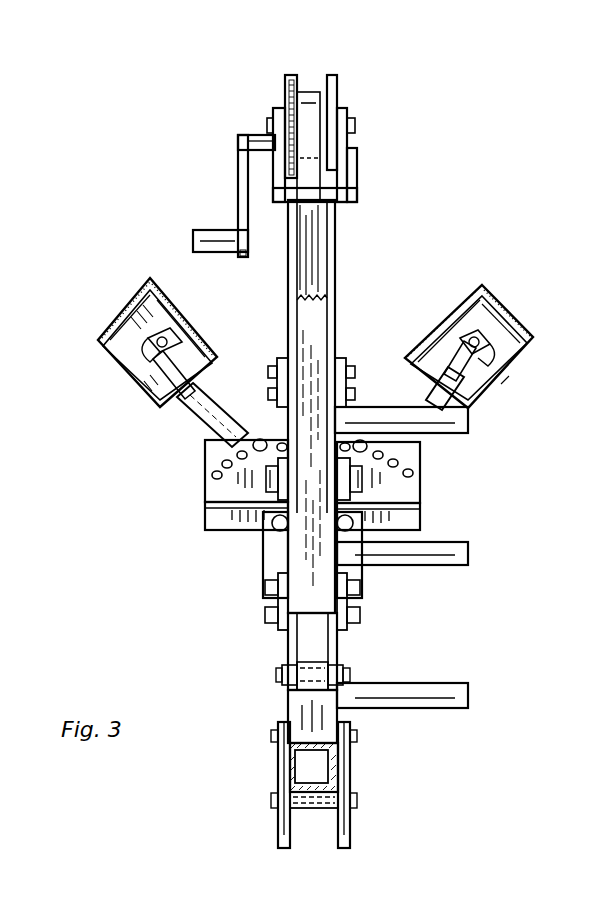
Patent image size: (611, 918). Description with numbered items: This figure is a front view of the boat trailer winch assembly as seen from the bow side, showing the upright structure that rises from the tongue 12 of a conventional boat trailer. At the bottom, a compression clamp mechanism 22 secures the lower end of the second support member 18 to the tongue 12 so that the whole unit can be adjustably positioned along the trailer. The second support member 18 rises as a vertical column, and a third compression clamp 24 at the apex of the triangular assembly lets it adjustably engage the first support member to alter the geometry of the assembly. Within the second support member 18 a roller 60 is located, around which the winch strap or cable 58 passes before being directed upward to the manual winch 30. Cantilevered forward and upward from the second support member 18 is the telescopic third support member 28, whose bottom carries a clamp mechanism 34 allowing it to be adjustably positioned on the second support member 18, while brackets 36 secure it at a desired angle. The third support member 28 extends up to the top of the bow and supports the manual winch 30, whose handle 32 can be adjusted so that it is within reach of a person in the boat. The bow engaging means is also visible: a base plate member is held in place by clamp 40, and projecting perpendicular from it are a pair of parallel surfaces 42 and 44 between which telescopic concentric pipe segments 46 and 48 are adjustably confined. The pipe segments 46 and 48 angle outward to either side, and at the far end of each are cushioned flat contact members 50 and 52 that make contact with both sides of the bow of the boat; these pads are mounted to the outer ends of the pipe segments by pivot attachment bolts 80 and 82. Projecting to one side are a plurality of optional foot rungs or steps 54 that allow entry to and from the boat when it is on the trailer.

The tongue 12 is at (337, 765).
The second support member 18 is at (295, 645).
The compression clamp mechanism 22 is at (285, 768).
The third compression clamp 24 is at (340, 357).
The third support member 28 is at (310, 328).
The manual winch 30 is at (285, 93).
The handle 32 is at (238, 203).
The clamp mechanism 34 is at (348, 628).
The brackets 36 is at (343, 488).
The clamp 40 is at (273, 557).
The parallel surface 42 is at (217, 457).
The parallel surface 44 is at (213, 517).
The telescopic concentric pipe segment 46 is at (425, 393).
The telescopic concentric pipe segment 48 is at (203, 413).
The cushioned flat contact member 50 is at (503, 292).
The cushioned flat contact member 52 is at (125, 298).
The foot rungs 54 is at (470, 423).
The winch strap or cable 58 is at (313, 233).
The roller 60 is at (297, 670).
The pivot attachment bolt 80 is at (472, 337).
The pivot attachment bolt 82 is at (168, 335).